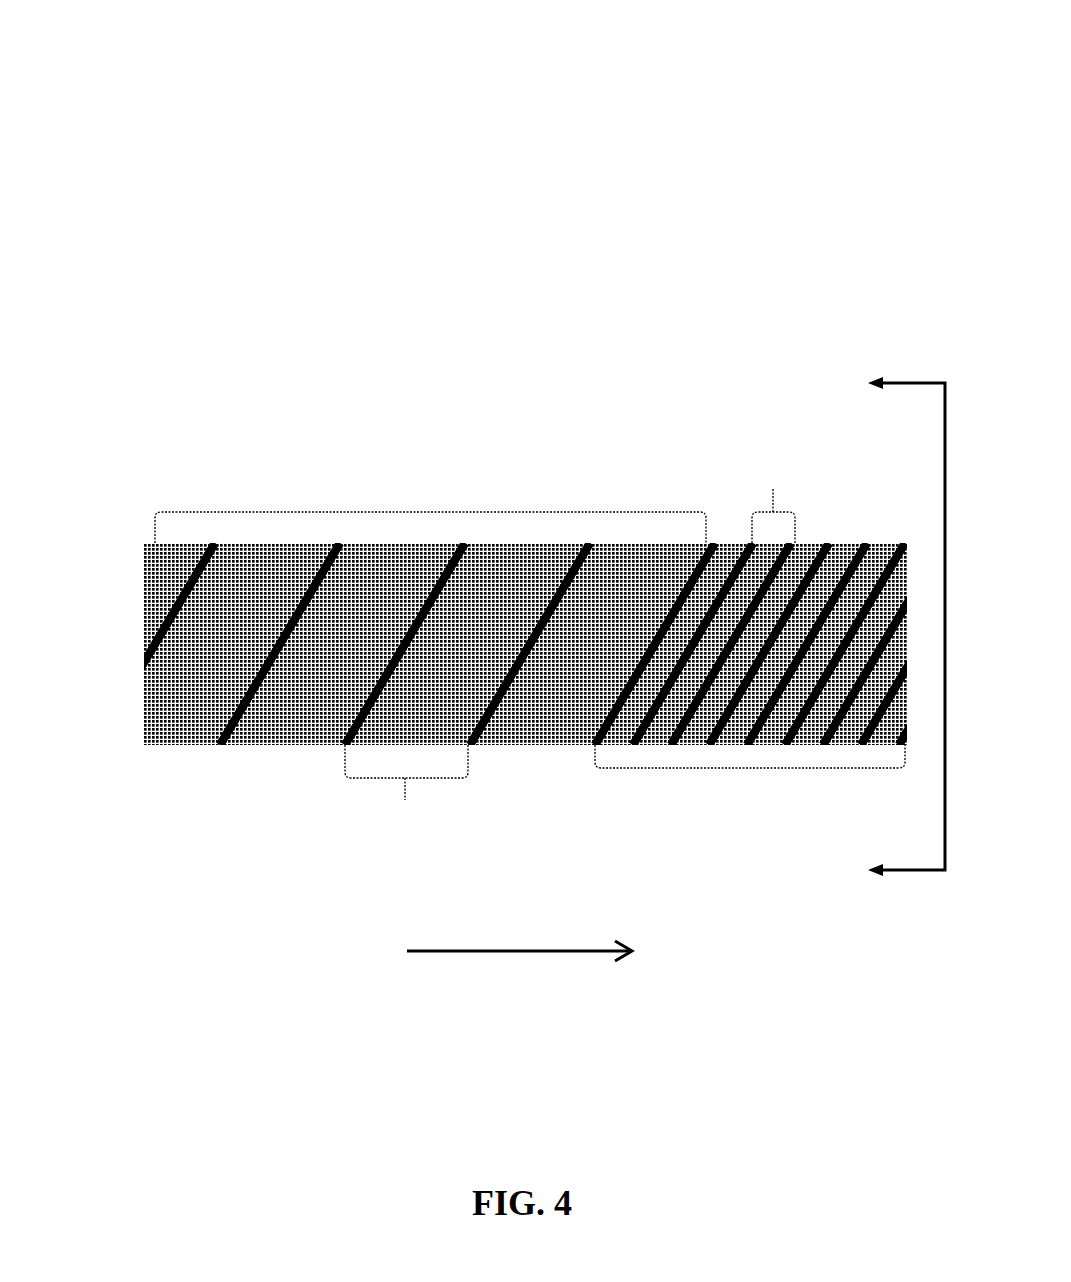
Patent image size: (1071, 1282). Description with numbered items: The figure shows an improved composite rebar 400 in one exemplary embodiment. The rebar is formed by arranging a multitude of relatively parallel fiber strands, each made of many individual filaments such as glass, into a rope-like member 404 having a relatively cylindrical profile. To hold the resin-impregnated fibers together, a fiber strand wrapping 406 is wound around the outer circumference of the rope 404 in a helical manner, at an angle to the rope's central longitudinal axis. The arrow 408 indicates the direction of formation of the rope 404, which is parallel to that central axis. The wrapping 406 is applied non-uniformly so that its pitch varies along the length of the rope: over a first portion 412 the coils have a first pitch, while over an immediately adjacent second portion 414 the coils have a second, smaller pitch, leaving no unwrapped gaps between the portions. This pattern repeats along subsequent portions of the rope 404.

The composite rebar 400 is at (90, 133).
The rope-like member 404 is at (265, 740).
The fiber strand wrapping 406 is at (452, 558).
The arrow 408 is at (522, 951).
The first portion 412 is at (430, 512).
The second portion 414 is at (750, 768).